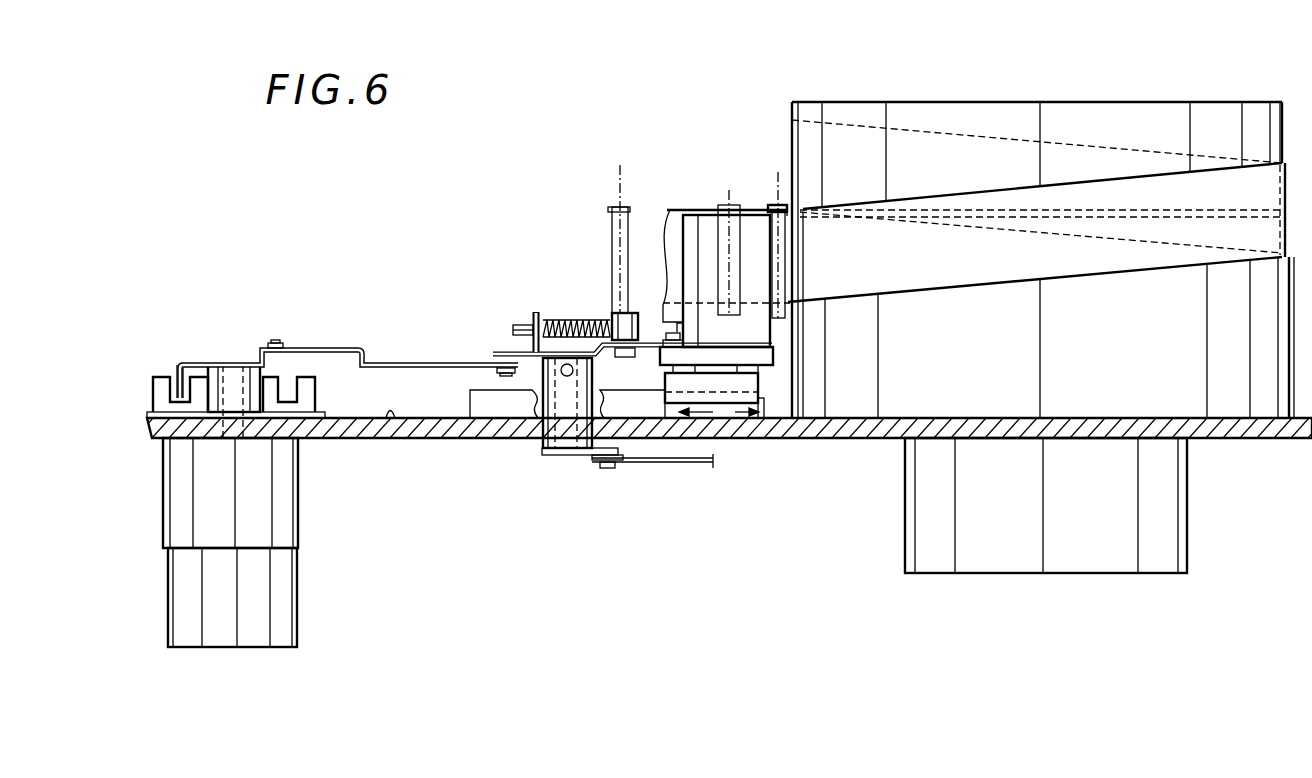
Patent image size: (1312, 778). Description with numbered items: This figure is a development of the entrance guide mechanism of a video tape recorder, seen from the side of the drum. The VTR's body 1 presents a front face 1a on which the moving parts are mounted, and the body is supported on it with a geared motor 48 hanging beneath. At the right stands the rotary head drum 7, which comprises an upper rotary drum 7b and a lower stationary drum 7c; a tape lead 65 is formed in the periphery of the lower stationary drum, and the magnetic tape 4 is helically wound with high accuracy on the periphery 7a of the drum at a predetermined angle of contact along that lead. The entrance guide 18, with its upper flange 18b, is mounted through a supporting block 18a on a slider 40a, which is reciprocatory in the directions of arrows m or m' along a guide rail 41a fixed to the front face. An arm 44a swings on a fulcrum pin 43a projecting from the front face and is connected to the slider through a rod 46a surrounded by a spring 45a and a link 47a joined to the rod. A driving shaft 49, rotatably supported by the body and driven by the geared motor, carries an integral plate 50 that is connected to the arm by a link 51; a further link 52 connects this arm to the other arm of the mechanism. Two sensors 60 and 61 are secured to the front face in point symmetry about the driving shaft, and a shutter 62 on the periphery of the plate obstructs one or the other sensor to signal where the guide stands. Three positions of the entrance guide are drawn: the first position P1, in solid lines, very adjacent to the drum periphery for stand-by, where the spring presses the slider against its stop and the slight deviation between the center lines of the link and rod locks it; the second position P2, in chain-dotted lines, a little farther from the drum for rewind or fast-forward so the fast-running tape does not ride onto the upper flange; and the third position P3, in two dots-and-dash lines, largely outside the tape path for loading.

The VTR's body 1 is at (440, 426).
The front face 1a is at (393, 420).
The magnetic tape 4 is at (971, 262).
The rotary head drum 7 is at (1072, 97).
The periphery of the rotary head drum 7a is at (1286, 103).
The upper rotary drum 7b is at (876, 142).
The lower stationary drum 7c is at (862, 398).
The entrance guide 18 is at (617, 237).
The supporting block 18a is at (757, 335).
The upper flange 18b is at (796, 207).
The slider 40a is at (762, 402).
The guide rail 41a is at (505, 400).
The fulcrum pin 43a is at (573, 440).
The arm 44a is at (567, 343).
The spring 45a is at (556, 322).
The rod 46a is at (580, 322).
The link 47a is at (651, 340).
The geared motor 48 is at (305, 522).
The driving shaft 49 is at (245, 383).
The plate 50 is at (242, 363).
The link 51 is at (397, 361).
The link 52 is at (672, 464).
The sensor 60 is at (161, 388).
The sensor 61 is at (306, 383).
The shutter 62 is at (186, 380).
The tape lead 65 is at (1120, 262).
The first position P1 is at (778, 176).
The second position P2 is at (729, 190).
The third position P3 is at (619, 225).
The arrow m is at (747, 450).
The arrow m' is at (702, 450).